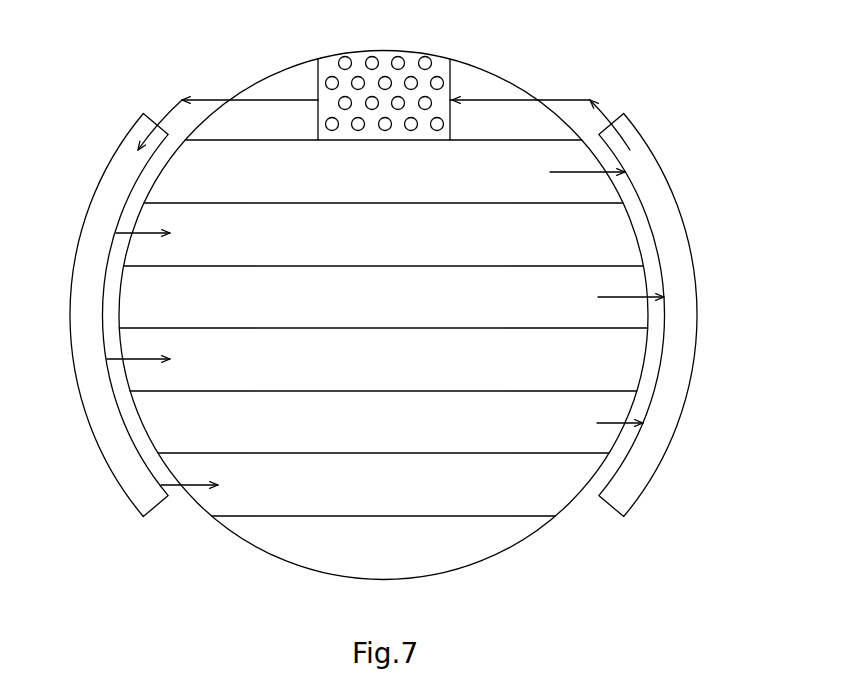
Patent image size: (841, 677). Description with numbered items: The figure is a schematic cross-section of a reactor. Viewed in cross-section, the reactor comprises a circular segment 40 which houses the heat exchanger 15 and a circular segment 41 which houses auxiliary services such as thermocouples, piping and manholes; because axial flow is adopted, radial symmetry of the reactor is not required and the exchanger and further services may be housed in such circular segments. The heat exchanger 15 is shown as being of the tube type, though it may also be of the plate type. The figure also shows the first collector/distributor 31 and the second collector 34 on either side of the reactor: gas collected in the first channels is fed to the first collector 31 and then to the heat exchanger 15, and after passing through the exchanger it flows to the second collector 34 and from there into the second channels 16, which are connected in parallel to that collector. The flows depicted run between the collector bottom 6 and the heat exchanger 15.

The collector bottom 6 is at (277, 520).
The heat exchanger 15 is at (385, 72).
The second channels 16 is at (472, 490).
The first collector/distributor 31 is at (630, 482).
The second collector 34 is at (138, 482).
The circular segment 40 is at (477, 85).
The circular segment 41 is at (333, 545).